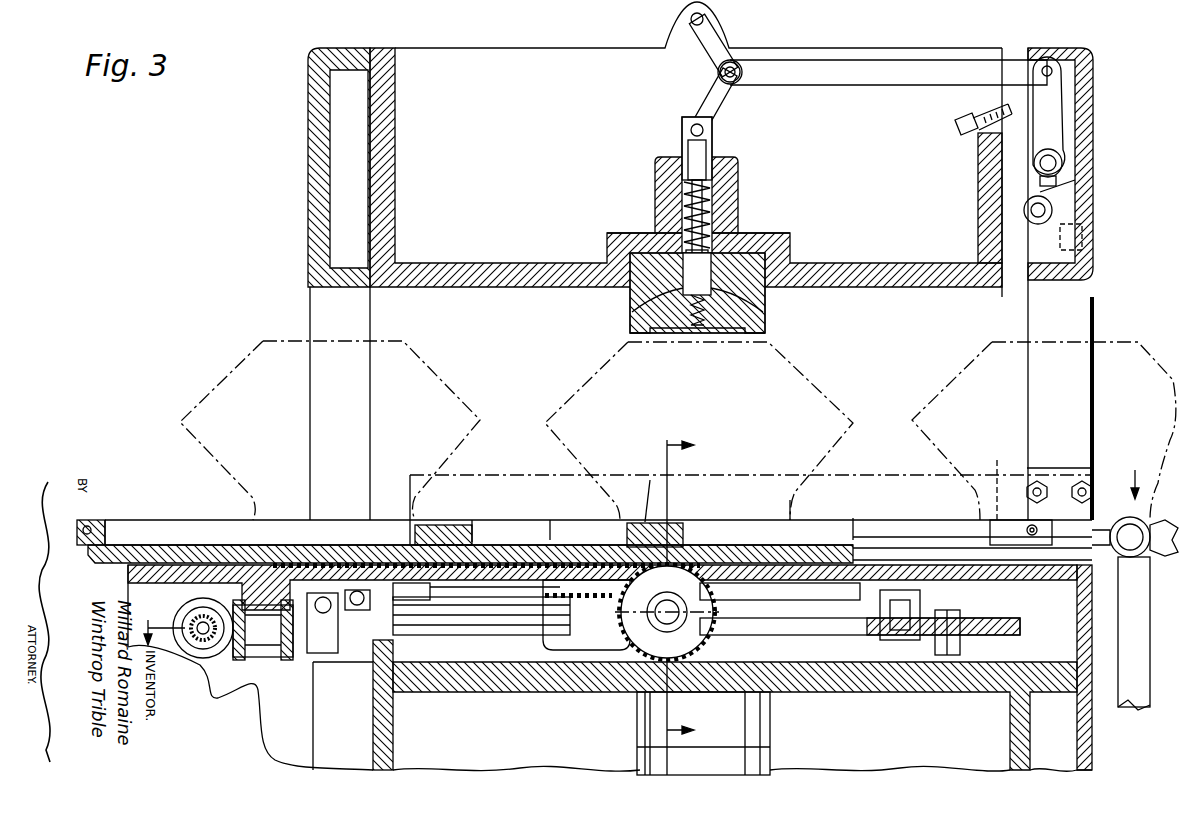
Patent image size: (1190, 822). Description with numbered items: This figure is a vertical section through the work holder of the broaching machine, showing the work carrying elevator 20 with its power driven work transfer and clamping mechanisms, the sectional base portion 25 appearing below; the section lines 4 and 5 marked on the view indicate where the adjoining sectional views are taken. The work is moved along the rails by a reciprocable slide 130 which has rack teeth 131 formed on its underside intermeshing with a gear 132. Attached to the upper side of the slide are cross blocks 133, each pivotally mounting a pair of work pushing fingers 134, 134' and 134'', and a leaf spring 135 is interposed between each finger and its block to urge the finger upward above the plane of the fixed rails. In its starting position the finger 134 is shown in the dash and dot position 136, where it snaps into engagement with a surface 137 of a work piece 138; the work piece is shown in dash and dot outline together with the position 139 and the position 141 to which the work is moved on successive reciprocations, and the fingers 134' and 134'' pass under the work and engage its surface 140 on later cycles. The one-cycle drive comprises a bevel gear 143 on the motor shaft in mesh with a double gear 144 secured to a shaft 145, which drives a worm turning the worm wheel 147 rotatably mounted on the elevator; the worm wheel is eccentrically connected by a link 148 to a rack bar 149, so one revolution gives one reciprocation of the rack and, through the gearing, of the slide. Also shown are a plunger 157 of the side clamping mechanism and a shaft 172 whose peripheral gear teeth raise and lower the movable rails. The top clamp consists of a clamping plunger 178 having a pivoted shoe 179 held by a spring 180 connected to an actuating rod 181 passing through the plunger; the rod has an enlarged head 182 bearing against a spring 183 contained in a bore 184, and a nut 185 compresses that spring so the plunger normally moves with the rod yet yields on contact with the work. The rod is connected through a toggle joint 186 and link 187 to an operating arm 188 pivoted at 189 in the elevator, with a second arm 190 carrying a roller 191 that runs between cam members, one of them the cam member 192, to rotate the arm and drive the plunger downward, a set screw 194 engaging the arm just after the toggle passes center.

The work carrying elevator 20 is at (546, 692).
The pedestal 25 is at (725, 765).
The section line 4-4 / hand wheel 4 is at (661, 590).
The section line 5- 5 is at (687, 606).
The reciprocable slide 130 is at (156, 552).
The rack teeth 131 is at (510, 541).
The gear 132 is at (626, 626).
The cross block 133 is at (690, 537).
The work pushing finger 134 is at (628, 482).
The work pushing finger 134' is at (461, 493).
The work pushing finger 134'' is at (109, 515).
The leaf spring 135 is at (616, 525).
The dash and dot position of finger 136 is at (1000, 528).
The surface of work piece 137 is at (995, 488).
The work piece 138 is at (972, 378).
The hopper 139 is at (604, 378).
The work surface 140 is at (792, 503).
The work position 141 is at (260, 353).
The bevel gear 143 is at (188, 655).
The double gear 144 is at (226, 650).
The shaft 145 is at (276, 655).
The worm wheel 147 is at (986, 618).
The link 148 is at (846, 622).
The rack bar 149 is at (586, 600).
The plunger 157 is at (480, 640).
The shaft 172 is at (515, 645).
The clamping plunger 178 is at (762, 296).
The pivoted shoe 179 is at (762, 326).
The spring 180 is at (690, 313).
The actuating rod 181 is at (696, 221).
The enlarged head 182 is at (712, 170).
The spring 183 is at (710, 200).
The bore 184 is at (685, 196).
The nut 185 is at (746, 250).
The toggle joint 186 is at (708, 88).
The link 187 is at (870, 70).
The operating arm 188 is at (1055, 112).
The pivot 189 is at (1062, 160).
The second arm 190 is at (1058, 203).
The roller 191 is at (1082, 240).
The cam member 192 is at (1010, 170).
The set screw 194 is at (966, 114).